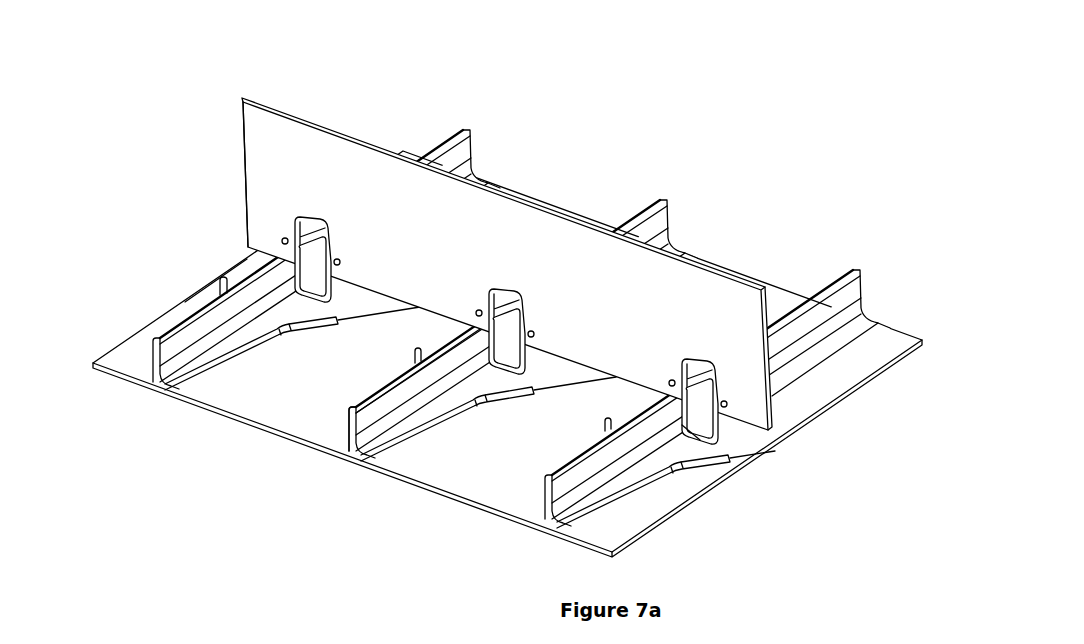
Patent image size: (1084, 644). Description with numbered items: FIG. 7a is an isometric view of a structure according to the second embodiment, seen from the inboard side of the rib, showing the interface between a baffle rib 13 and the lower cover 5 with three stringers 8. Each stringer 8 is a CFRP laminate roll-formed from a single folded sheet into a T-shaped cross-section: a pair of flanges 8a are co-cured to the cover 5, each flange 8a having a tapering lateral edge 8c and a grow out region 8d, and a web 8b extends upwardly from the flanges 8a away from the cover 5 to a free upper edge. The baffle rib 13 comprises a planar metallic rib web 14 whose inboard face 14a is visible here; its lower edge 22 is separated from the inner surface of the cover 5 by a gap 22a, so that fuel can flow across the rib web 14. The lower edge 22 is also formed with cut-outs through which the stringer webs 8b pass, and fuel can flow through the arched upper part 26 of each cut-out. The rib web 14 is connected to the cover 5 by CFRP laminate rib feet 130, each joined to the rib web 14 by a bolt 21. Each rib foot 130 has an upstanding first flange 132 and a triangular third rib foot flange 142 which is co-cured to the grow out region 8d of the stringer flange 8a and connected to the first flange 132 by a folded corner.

The lower cover 5 is at (263, 408).
The stringer 8 is at (488, 158).
The flange 8a is at (396, 441).
The web 8b is at (346, 422).
The tapering lateral edge 8c is at (503, 398).
The grow out region 8d is at (512, 381).
The baffle rib 13 is at (588, 167).
The rib web 14 is at (314, 155).
The inboard face 14a is at (264, 130).
The bolt 21 is at (727, 408).
The lower edge 22 is at (418, 307).
The gap 22a is at (609, 383).
The arched upper part 26 is at (308, 226).
The rib foot 130 is at (688, 438).
The first rib foot flange 132 is at (500, 330).
The third rib foot flange 142 is at (701, 428).